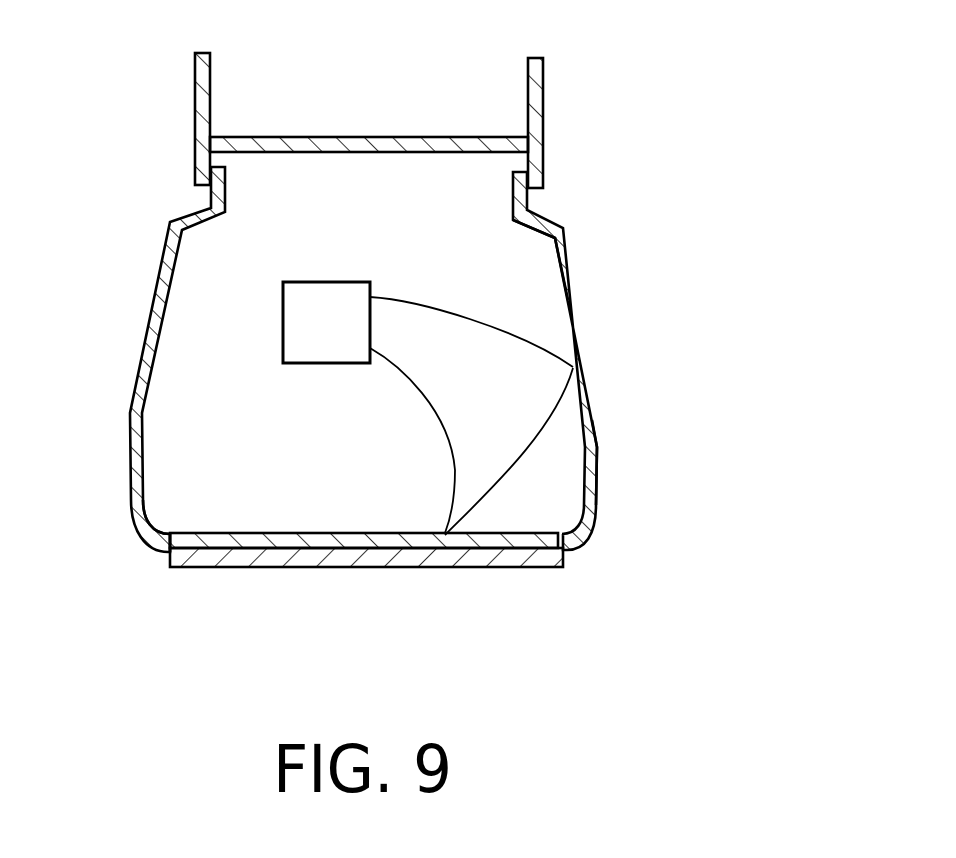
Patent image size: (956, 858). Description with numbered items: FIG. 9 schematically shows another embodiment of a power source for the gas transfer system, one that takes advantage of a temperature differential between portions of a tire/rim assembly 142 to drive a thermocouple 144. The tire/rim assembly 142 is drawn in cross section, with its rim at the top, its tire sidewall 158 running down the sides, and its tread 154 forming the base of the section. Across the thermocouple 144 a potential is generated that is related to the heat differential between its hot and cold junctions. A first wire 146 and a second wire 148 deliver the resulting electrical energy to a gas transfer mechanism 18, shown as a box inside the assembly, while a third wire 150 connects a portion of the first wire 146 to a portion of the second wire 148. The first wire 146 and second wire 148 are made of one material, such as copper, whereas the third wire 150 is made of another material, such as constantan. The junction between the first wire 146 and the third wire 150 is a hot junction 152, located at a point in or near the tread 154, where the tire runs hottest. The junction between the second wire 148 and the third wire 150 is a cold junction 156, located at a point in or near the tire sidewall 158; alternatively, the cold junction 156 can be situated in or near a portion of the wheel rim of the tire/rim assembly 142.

The gas transfer mechanism 18 is at (282, 308).
The tire/rim assembly 142 is at (543, 157).
The thermocouple 144 is at (681, 415).
The first wire 146 is at (453, 493).
The second wire 148 is at (493, 327).
The third wire 150 is at (545, 448).
The hot junction 152 is at (206, 533).
The tread 154 is at (260, 568).
The cold junction 156 is at (592, 370).
The tire sidewall 158 is at (567, 250).